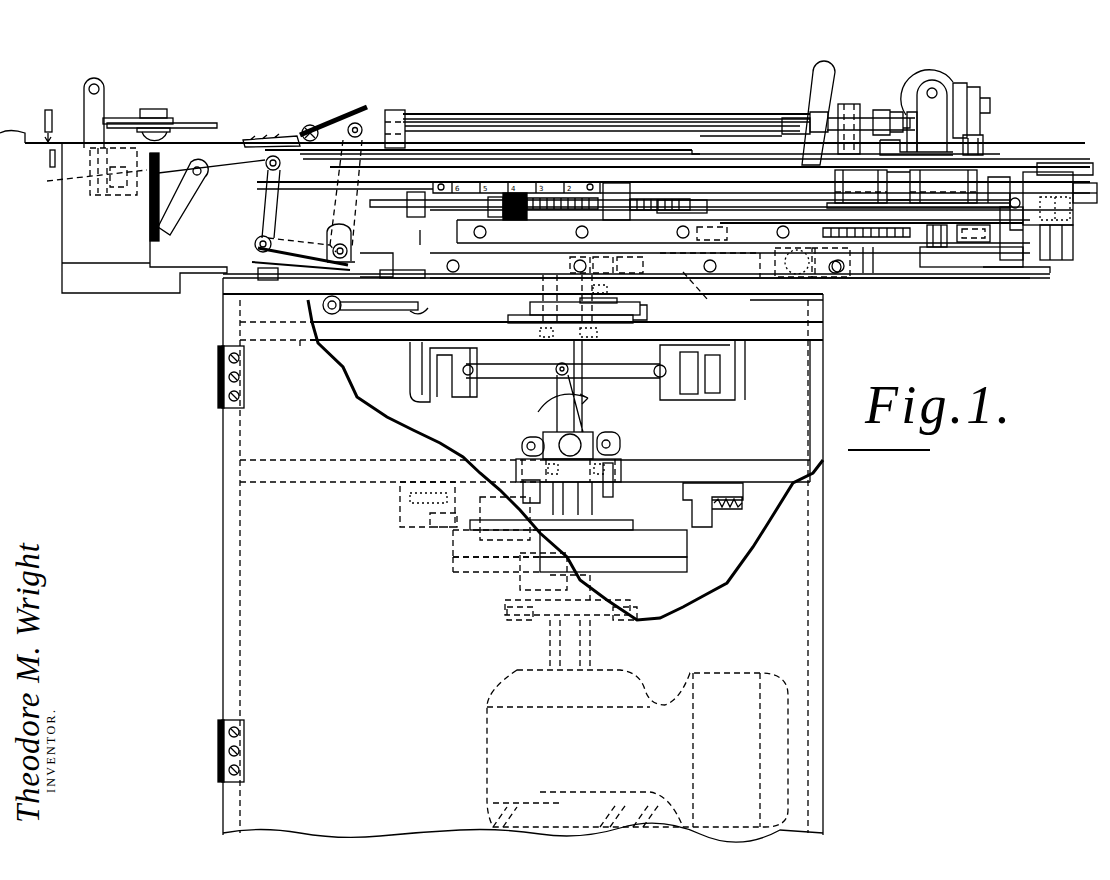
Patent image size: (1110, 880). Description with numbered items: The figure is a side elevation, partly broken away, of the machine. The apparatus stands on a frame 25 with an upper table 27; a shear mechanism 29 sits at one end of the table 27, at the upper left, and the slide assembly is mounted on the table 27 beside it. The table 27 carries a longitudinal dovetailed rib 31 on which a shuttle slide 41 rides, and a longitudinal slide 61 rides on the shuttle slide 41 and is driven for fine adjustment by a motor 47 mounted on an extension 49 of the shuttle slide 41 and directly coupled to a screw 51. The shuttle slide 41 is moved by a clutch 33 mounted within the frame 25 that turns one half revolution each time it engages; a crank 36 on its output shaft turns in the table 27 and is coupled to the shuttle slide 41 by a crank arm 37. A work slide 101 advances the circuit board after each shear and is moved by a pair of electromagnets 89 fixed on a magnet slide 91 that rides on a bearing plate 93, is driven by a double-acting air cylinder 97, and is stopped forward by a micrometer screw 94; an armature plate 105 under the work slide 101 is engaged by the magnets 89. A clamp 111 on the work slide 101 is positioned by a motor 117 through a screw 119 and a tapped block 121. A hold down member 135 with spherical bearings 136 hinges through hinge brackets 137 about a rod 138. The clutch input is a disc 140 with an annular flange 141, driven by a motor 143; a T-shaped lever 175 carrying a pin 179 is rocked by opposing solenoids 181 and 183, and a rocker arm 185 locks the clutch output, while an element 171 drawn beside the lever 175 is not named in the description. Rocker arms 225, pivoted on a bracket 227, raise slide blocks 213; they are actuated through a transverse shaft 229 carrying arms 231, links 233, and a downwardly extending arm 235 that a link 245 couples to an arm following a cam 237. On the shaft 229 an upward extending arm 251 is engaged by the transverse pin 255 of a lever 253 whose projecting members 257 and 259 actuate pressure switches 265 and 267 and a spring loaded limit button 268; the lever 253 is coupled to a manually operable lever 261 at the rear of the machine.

The frame 25 is at (823, 574).
The table 27 is at (756, 302).
The shear mechanism 29 is at (37, 113).
The dovetailed rib 31 is at (428, 257).
The clutch 33 is at (661, 521).
The crank 36 is at (647, 305).
The crank arm 37 is at (704, 293).
The shuttle slide 41 is at (500, 274).
The motor 47 is at (1023, 260).
The extension 49 is at (975, 270).
The screw 51 is at (853, 240).
The longitudinal slide 61 is at (548, 241).
The electromagnets 89 is at (805, 195).
The magnet slide 91 is at (907, 215).
The bearing plate 93 is at (885, 224).
The micrometer screw 94 is at (600, 212).
The double-acting air cylinder 97 is at (1073, 200).
The work slide 101 is at (865, 157).
The armature plate 105 is at (713, 167).
The clamp 111 is at (349, 105).
The motor 117 is at (958, 82).
The screw 119 is at (575, 100).
The tapped block 121 is at (398, 111).
The hold down member 135 is at (207, 121).
The spherical bearings 136 is at (178, 127).
The hinge brackets 137 is at (120, 118).
The rod 138 is at (89, 85).
The disc 140 is at (688, 563).
The annular flange 141 is at (697, 545).
The motor 143 is at (727, 673).
The slide block 171 is at (512, 482).
The T-shaped lever 175 is at (562, 392).
The pin 179 is at (617, 490).
The solenoid 181 is at (710, 387).
The solenoid 183 is at (443, 378).
The rocker arm 185 is at (427, 511).
The slide block 213 is at (77, 181).
The rocker arms 225 is at (140, 172).
The bracket 227 is at (173, 208).
The transverse shaft 229 is at (430, 262).
The arms 231 is at (303, 242).
The link 233 is at (262, 200).
The downwardly extending arm 235 is at (305, 341).
The cam 237 is at (648, 330).
The link 245 is at (420, 312).
The upward extending arm 251 is at (420, 237).
The lever 253 is at (330, 126).
The transverse pin 255 is at (352, 241).
The projecting member 257 is at (428, 272).
The projecting member 259 is at (258, 240).
The manually operable lever 261 is at (812, 99).
The pressure switch 265 is at (762, 126).
The pressure switch 267 is at (283, 278).
The spring loaded limit button 268 is at (253, 263).